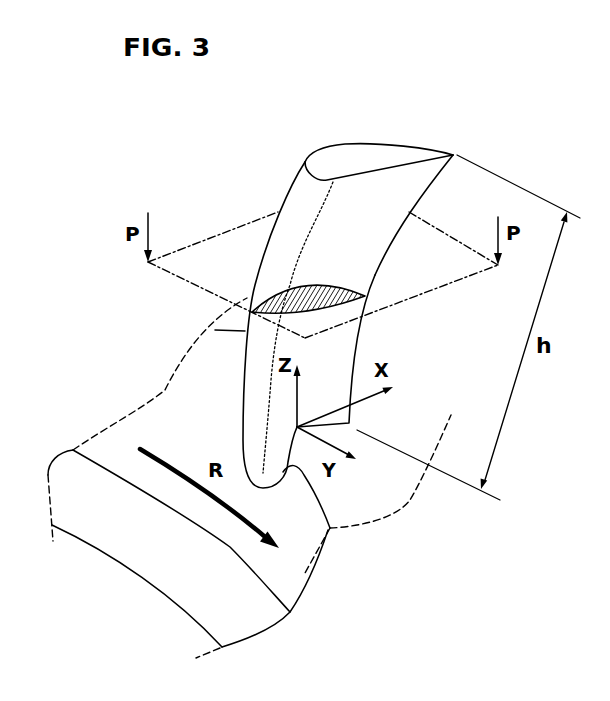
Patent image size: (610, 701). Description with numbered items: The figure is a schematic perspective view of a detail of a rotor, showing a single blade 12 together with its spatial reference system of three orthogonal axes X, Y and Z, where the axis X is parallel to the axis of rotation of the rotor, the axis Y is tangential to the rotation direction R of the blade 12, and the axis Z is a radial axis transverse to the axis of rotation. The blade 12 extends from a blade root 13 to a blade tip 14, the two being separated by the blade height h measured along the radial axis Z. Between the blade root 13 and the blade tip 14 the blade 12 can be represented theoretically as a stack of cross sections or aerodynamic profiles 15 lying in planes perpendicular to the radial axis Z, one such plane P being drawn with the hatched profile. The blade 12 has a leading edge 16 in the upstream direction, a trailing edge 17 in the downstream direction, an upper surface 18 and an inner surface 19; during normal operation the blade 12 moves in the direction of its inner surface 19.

The blade 12 is at (192, 190).
The blade root 13 is at (332, 530).
The blade tip 14 is at (358, 158).
The cross sections or aerodynamic profiles 15 is at (290, 277).
The leading edge 16 is at (243, 406).
The trailing edge 17 is at (357, 343).
The upper surface 18 is at (283, 200).
The inner surface 19 is at (367, 242).